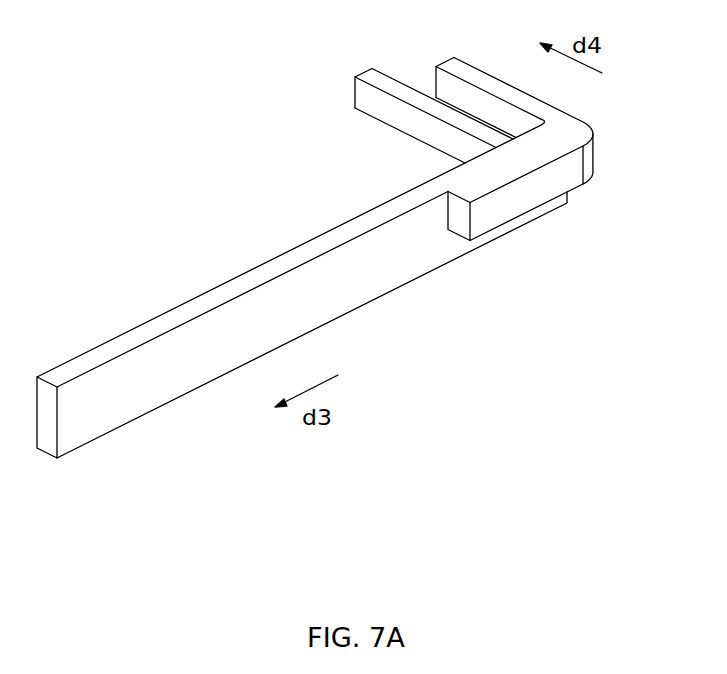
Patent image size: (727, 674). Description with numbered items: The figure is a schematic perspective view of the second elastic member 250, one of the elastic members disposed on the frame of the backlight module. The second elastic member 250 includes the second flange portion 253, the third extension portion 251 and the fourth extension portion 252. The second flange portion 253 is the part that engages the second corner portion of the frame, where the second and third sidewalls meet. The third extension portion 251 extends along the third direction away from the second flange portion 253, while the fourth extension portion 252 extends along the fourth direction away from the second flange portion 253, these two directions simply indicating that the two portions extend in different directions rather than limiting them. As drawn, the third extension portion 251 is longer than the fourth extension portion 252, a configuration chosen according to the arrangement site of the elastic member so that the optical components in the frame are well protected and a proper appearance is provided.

The second elastic member 250 is at (362, 234).
The third extension portion 251 is at (167, 322).
The fourth extension portion 252 is at (389, 80).
The second flange portion 253 is at (570, 128).